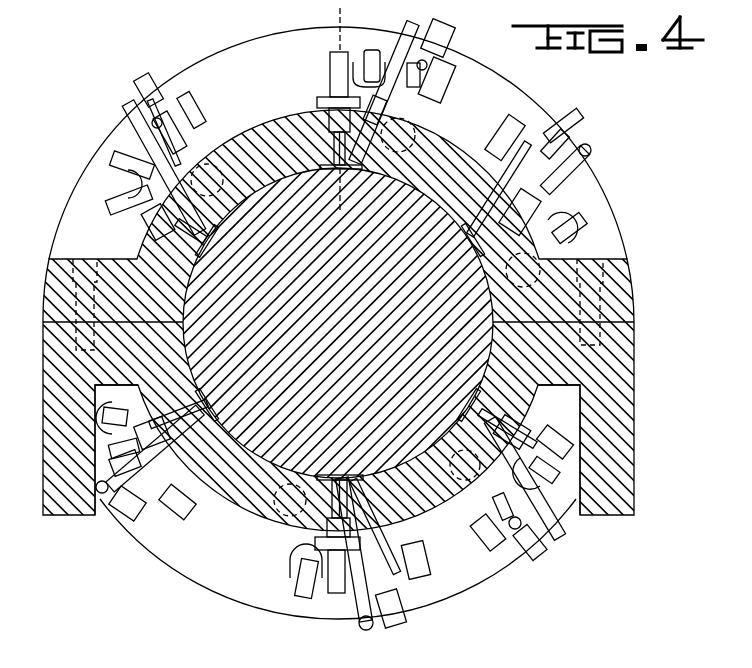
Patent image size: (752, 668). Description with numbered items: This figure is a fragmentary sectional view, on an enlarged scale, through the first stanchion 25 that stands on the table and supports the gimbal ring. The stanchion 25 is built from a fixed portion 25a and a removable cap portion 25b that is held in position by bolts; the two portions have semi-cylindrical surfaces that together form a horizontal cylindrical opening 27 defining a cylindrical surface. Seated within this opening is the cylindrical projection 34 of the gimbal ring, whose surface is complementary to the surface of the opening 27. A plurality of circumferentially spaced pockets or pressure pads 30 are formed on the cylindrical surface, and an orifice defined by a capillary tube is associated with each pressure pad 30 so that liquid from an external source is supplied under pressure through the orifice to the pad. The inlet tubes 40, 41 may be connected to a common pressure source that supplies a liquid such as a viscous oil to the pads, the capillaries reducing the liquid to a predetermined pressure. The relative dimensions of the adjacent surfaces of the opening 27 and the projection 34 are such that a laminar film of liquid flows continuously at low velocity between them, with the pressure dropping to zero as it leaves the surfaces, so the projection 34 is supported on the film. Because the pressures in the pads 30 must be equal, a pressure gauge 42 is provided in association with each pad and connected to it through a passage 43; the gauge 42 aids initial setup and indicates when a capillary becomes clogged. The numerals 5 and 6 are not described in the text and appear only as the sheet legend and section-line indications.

The chuck assembly 5 is at (72, 165).
The section line 6- 6 is at (340, 6).
The first stanchion 25 is at (630, 500).
The fixed portion 25a is at (568, 486).
The removable cap portion 25b is at (626, 302).
The horizontal cylindrical opening 27 is at (396, 464).
The pressure pads 30 is at (343, 172).
The cylindrical projection 34 is at (197, 517).
The inlet tube 40 is at (333, 78).
The inlet tube 41 is at (373, 50).
The pressure gauge 42 is at (452, 78).
The passage 43 is at (395, 119).